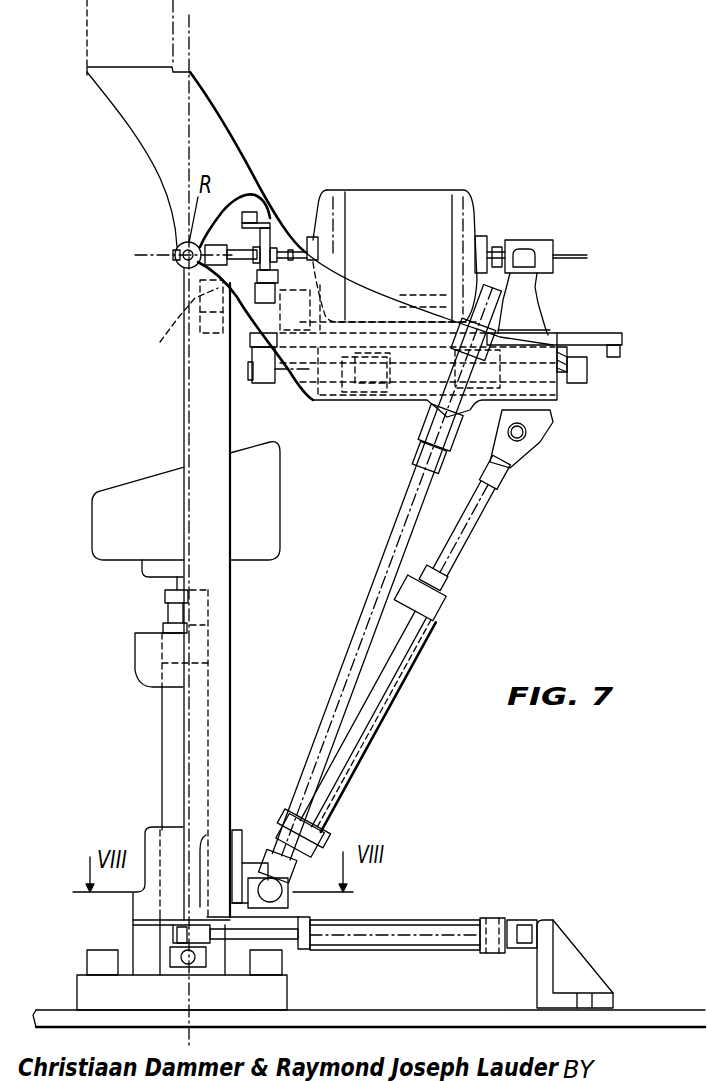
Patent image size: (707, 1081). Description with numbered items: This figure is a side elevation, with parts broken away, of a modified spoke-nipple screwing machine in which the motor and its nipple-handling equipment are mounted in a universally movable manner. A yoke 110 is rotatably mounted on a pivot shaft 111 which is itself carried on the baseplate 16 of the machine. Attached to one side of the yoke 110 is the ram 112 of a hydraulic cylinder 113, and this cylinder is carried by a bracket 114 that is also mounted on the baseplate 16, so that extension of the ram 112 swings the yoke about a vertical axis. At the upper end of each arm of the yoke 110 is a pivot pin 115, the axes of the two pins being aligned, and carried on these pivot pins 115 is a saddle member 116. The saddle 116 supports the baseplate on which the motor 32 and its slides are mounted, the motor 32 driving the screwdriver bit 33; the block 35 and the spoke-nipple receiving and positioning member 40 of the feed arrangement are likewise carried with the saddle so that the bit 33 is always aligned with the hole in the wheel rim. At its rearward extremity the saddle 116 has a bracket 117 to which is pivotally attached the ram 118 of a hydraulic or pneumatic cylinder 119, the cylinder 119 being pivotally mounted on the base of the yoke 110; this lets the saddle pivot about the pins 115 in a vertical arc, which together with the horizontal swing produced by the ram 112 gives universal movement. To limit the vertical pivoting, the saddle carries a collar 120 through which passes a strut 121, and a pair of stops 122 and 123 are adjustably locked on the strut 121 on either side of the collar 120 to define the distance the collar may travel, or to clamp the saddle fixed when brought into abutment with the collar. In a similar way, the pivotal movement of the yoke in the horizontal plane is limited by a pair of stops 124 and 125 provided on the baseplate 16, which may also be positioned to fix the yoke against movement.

The saddle member 116 is at (214, 127).
The pivot pin 115 is at (178, 266).
The block 35 is at (162, 339).
The spoke-nipple receiving and positioning member 40 is at (243, 220).
The screwdriver bit 33 is at (243, 243).
The motor 32 is at (430, 207).
The stop 123 is at (500, 335).
The bracket 117 is at (537, 418).
The collar 120 is at (422, 422).
The stop 122 is at (417, 457).
The strut 121 is at (405, 507).
The ram 118 is at (473, 507).
The hydraulic or pneumatic cylinder 119 is at (373, 702).
The yoke 110 is at (223, 595).
The pivot shaft 111 is at (167, 720).
The ram 112 is at (280, 927).
The hydraulic cylinder 113 is at (465, 927).
The bracket 114 is at (547, 963).
The baseplate 16 is at (460, 1013).
The stop 124 is at (90, 957).
The stop 125 is at (270, 965).